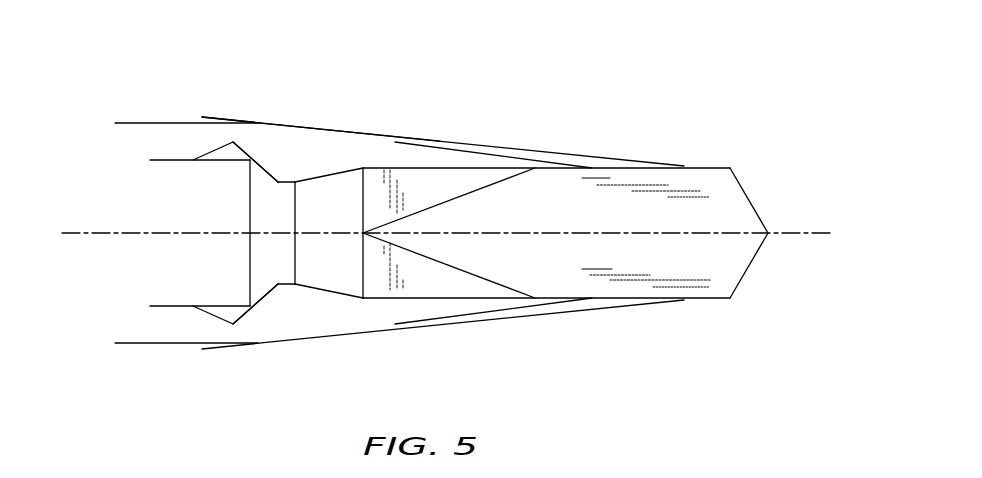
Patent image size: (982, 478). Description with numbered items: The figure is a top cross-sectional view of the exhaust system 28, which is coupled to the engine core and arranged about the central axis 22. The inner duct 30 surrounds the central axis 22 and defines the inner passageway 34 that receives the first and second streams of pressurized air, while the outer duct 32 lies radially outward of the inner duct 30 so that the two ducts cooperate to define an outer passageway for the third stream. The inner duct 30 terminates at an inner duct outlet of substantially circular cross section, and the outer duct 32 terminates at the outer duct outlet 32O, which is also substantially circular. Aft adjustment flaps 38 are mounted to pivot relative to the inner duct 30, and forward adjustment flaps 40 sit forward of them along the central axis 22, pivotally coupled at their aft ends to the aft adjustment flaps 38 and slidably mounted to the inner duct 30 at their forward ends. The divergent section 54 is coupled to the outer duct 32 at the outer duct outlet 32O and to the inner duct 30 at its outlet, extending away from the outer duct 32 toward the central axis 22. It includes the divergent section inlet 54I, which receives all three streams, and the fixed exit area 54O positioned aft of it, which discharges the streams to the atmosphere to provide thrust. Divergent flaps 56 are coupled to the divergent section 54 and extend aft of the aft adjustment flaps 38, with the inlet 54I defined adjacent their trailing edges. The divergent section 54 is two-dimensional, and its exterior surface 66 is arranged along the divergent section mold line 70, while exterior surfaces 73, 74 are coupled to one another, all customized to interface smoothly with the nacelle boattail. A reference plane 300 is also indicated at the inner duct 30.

The central axis 22 is at (88, 230).
The exhaust system 28 is at (390, 200).
The inner duct 30 is at (160, 167).
The outer duct 32 is at (128, 118).
The outer duct outlet 32O is at (252, 146).
The inner passageway 34 is at (166, 238).
The aft adjustment flaps 38 is at (267, 154).
The forward adjustment flaps 40 is at (198, 142).
The divergent section 54 is at (613, 212).
The divergent section inlet 54I is at (370, 200).
The fixed exit area 54O is at (752, 192).
The divergent flaps 56 is at (313, 174).
The exterior surface 66 is at (458, 141).
The divergent section mold line 70 is at (218, 117).
The exterior surface 73 is at (720, 265).
The exterior surface 74 is at (695, 304).
The core inlet plane 300 is at (248, 233).